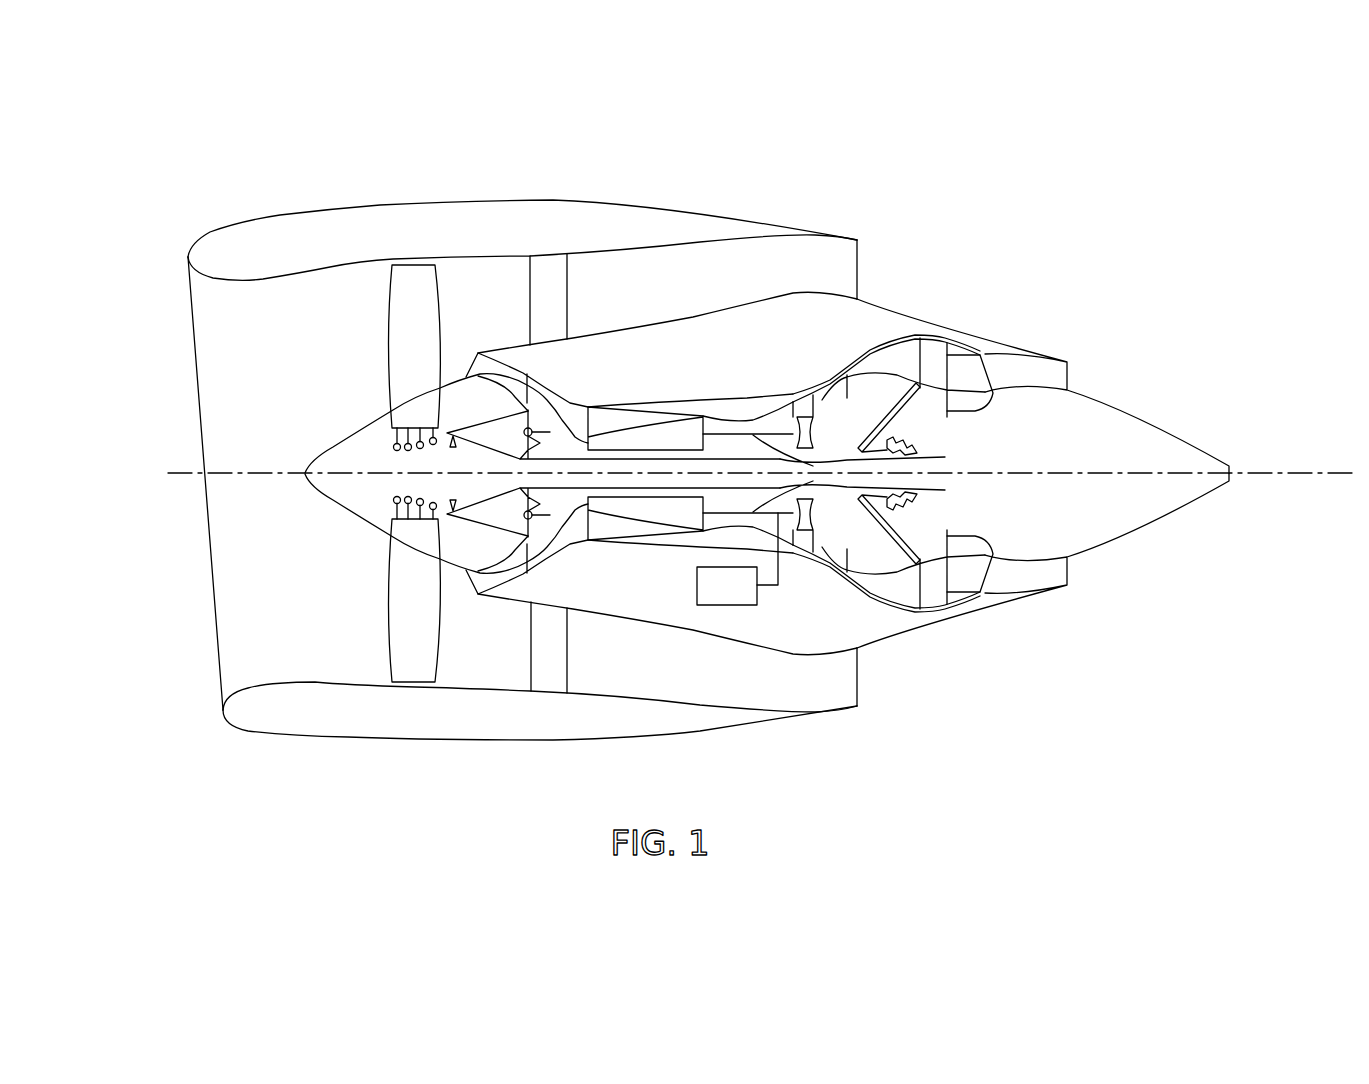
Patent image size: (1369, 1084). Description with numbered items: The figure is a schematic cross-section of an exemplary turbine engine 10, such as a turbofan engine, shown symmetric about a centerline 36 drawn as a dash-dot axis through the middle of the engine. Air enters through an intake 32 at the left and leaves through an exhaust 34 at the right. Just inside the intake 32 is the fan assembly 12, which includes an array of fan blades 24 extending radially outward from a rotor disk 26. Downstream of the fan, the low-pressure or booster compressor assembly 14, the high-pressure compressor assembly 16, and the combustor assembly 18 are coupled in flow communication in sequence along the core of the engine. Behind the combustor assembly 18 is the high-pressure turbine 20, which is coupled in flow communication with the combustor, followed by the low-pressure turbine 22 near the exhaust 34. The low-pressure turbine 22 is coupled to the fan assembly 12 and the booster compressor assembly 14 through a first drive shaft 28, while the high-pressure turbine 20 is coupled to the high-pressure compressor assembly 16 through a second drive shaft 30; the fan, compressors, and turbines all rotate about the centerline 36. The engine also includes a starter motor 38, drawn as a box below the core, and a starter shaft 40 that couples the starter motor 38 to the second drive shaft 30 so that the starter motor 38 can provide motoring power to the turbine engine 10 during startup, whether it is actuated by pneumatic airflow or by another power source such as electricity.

The turbine engine 10 is at (705, 440).
The fan assembly 12 is at (374, 473).
The booster compressor assembly 14 is at (483, 340).
The high-pressure compressor assembly 16 is at (640, 405).
The combustor assembly 18 is at (757, 398).
The high-pressure turbine 20 is at (812, 378).
The low-pressure turbine 22 is at (890, 338).
The fan blades 24 is at (402, 362).
The rotor disk 26 is at (352, 464).
The first drive shaft 28 is at (567, 459).
The second drive shaft 30 is at (925, 458).
The intake 32 is at (150, 308).
The exhaust 34 is at (1088, 378).
The centerline 36 is at (1281, 473).
The starter motor 38 is at (716, 597).
The starter shaft 40 is at (772, 585).